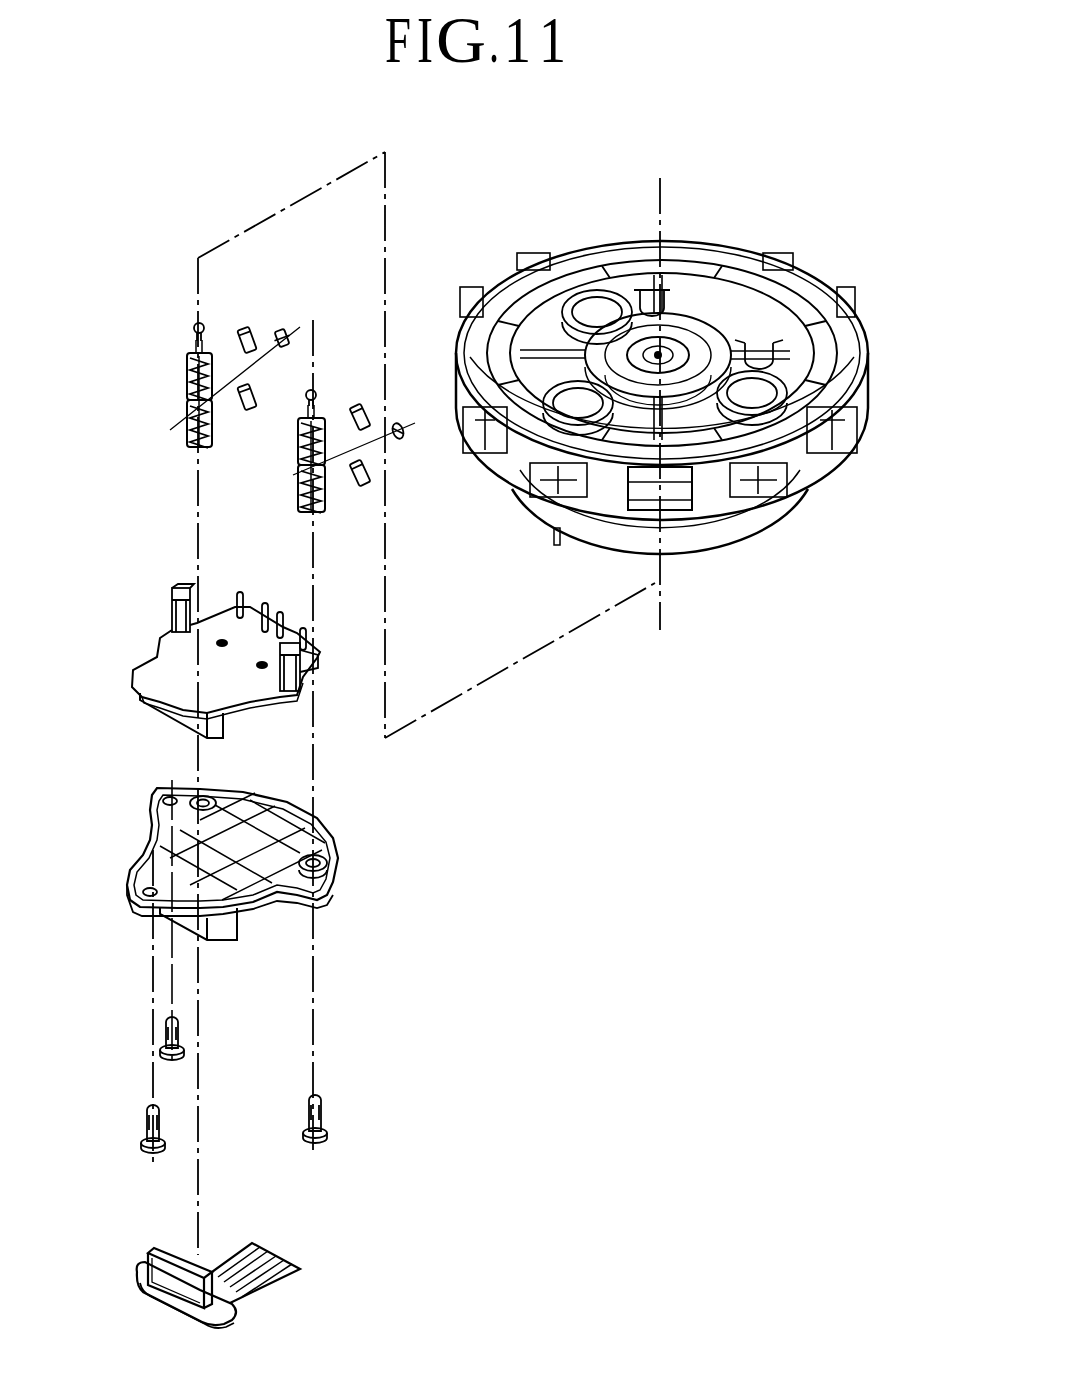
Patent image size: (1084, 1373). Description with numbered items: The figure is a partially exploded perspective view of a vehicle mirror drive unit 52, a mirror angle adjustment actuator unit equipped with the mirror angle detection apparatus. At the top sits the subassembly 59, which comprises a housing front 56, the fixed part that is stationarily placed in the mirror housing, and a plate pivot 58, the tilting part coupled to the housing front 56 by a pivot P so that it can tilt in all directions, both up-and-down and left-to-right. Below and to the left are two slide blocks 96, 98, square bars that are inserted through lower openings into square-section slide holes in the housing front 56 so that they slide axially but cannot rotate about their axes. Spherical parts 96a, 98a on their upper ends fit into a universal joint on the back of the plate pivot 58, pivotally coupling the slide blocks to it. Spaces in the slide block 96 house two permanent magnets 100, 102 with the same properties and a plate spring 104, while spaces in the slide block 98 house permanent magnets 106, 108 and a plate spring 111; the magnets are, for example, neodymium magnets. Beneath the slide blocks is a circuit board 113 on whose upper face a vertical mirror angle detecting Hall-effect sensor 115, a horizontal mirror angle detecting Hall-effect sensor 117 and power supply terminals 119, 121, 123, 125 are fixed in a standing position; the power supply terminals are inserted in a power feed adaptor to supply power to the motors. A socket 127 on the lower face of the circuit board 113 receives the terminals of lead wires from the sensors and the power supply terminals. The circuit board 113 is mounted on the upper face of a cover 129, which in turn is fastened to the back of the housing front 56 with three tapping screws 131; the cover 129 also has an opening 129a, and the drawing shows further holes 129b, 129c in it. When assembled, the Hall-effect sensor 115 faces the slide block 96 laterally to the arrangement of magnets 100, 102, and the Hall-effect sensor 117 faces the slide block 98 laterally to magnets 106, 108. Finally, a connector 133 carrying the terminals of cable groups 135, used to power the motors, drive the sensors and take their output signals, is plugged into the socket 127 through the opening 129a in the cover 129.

The vehicle mirror drive unit 52 is at (836, 120).
The housing front 56 is at (690, 537).
The plate pivot 58 is at (727, 500).
The subassembly 59 is at (842, 580).
The pivot P is at (674, 338).
The slide block 96 is at (180, 390).
The spherical part 96a is at (195, 328).
The slide block 98 is at (284, 486).
The spherical part 98a is at (313, 390).
The permanent magnet 100 is at (246, 328).
The permanent magnet 102 is at (248, 412).
The plate spring 104 is at (282, 330).
The permanent magnet 106 is at (367, 417).
The permanent magnet 108 is at (363, 490).
The plate spring 111 is at (403, 440).
The circuit board 113 is at (162, 672).
The vertical mirror angle detecting Hall-effect sensor 115 is at (173, 592).
The horizontal mirror angle detecting Hall-effect sensor 117 is at (307, 667).
The power supply terminal 119 is at (242, 593).
The power supply terminal 121 is at (267, 605).
The power supply terminal 123 is at (284, 617).
The power supply terminal 125 is at (303, 633).
The socket 127 is at (160, 707).
The cover 129 is at (287, 798).
The opening 129a is at (223, 937).
The board hole 129b is at (207, 790).
The board hole 129c is at (338, 848).
The tapping screw 131 is at (160, 1036).
The connector 133 is at (177, 1257).
The cable group 135 is at (275, 1296).